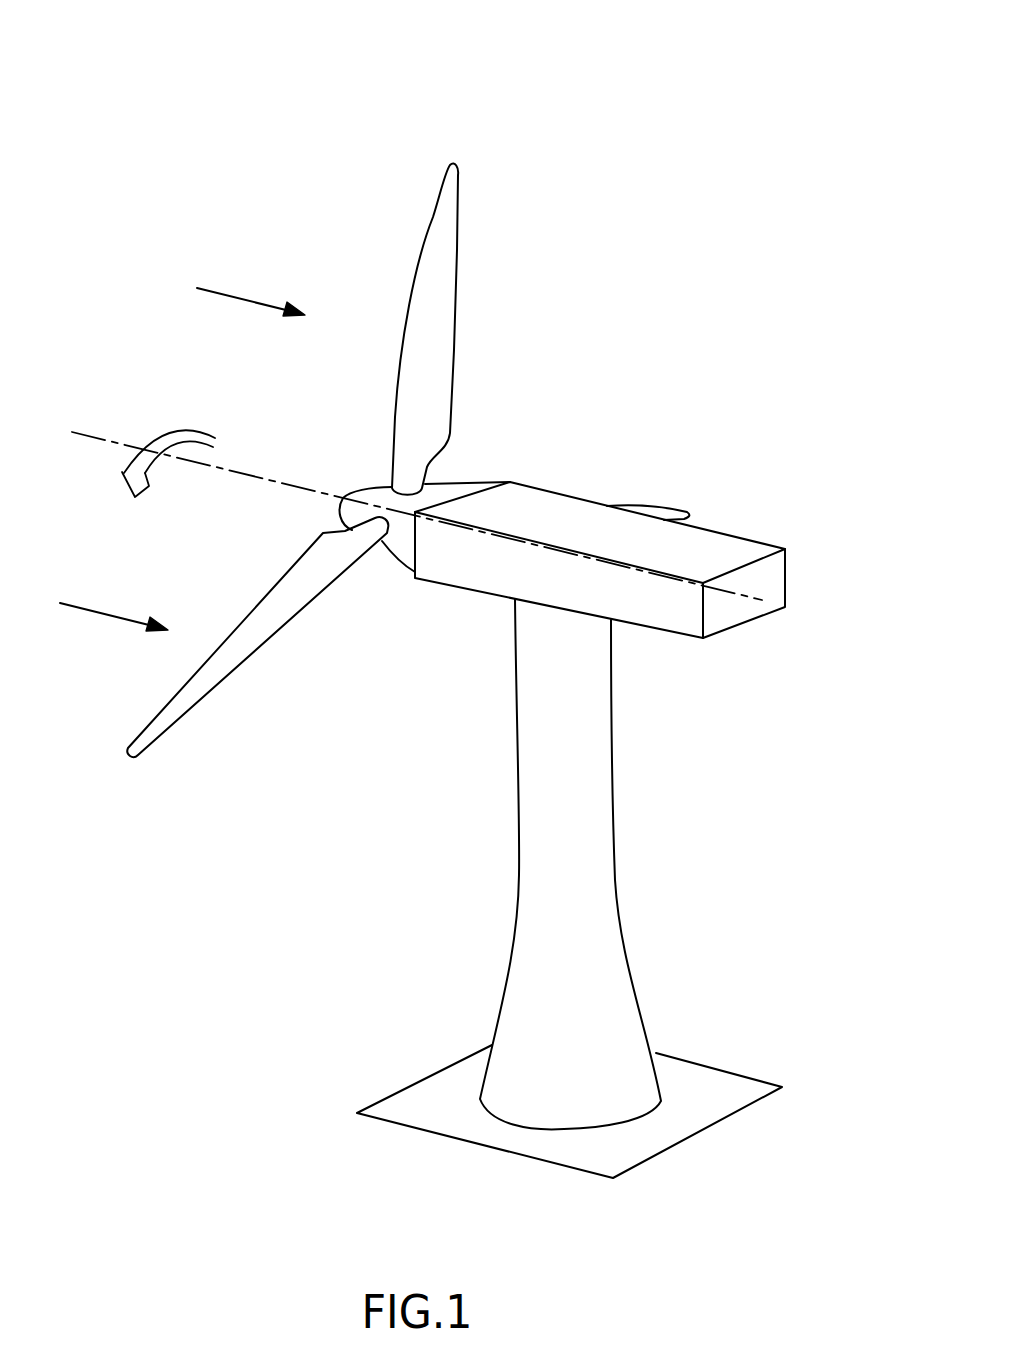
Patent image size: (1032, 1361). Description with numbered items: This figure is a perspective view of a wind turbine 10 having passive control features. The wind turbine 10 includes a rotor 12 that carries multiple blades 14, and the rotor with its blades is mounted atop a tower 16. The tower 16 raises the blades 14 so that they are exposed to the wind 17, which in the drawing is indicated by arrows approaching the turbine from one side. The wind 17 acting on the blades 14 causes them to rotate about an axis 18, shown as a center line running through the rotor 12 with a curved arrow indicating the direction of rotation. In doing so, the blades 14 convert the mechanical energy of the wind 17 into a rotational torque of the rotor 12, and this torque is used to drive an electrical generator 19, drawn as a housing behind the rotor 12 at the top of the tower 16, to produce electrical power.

The wind turbine 10 is at (763, 57).
The rotor 12 is at (468, 482).
The blades 14 is at (452, 282).
The tower 16 is at (606, 812).
The wind 17 is at (227, 295).
The axis 18 is at (235, 468).
The electrical generator 19 is at (743, 548).